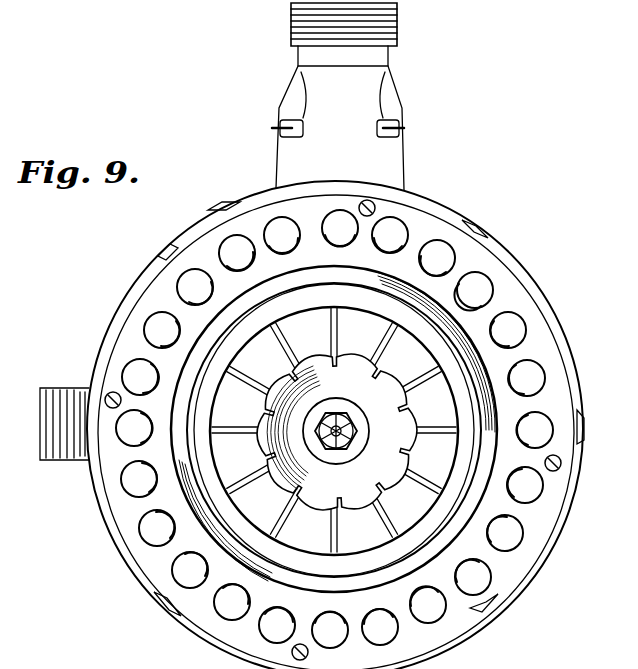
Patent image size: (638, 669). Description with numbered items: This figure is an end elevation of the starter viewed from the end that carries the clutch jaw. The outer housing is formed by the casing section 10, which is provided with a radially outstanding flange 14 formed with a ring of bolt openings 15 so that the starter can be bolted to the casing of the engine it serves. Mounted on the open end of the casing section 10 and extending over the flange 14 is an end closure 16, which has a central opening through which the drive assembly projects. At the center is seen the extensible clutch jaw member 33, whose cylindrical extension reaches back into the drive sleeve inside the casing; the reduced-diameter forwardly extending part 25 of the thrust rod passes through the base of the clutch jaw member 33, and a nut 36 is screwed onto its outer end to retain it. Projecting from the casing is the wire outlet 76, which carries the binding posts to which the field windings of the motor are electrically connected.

The casing section 10 is at (519, 591).
The radially outstanding flange 14 is at (530, 556).
The bolt openings 15 is at (491, 289).
The end closure 16 is at (196, 349).
The forwardly extending part of the thrust rod 25 is at (358, 447).
The extensible clutch jaw member 33 is at (404, 514).
The nut 36 is at (347, 413).
The wire outlet 76 is at (397, 107).